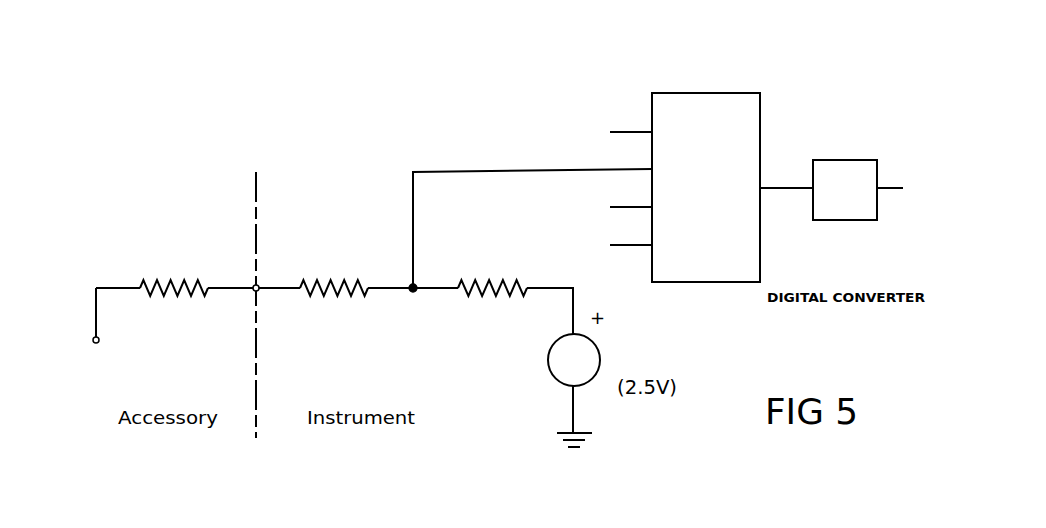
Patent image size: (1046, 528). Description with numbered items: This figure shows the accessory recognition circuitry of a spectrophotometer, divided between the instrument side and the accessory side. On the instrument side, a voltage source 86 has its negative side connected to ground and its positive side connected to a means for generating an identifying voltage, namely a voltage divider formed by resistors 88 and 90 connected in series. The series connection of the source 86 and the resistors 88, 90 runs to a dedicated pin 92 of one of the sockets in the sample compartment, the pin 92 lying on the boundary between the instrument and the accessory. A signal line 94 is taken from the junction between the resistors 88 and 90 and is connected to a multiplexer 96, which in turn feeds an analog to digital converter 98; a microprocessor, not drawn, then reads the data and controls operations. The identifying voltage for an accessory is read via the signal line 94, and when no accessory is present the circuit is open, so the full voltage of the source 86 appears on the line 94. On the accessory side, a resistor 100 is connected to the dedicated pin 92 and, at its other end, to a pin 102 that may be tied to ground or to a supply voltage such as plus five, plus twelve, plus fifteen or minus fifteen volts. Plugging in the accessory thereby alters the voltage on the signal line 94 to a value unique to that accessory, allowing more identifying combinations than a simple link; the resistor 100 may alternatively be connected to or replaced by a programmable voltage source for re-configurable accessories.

The voltage source 86 is at (567, 360).
The resistor 88 is at (492, 278).
The resistor 90 is at (330, 277).
The dedicated pin 92 is at (258, 291).
The signal line 94 is at (468, 172).
The multiplexer 96 is at (690, 120).
The analog to digital converter 98 is at (843, 200).
The resistor 100 is at (160, 278).
The pin 102 is at (99, 340).